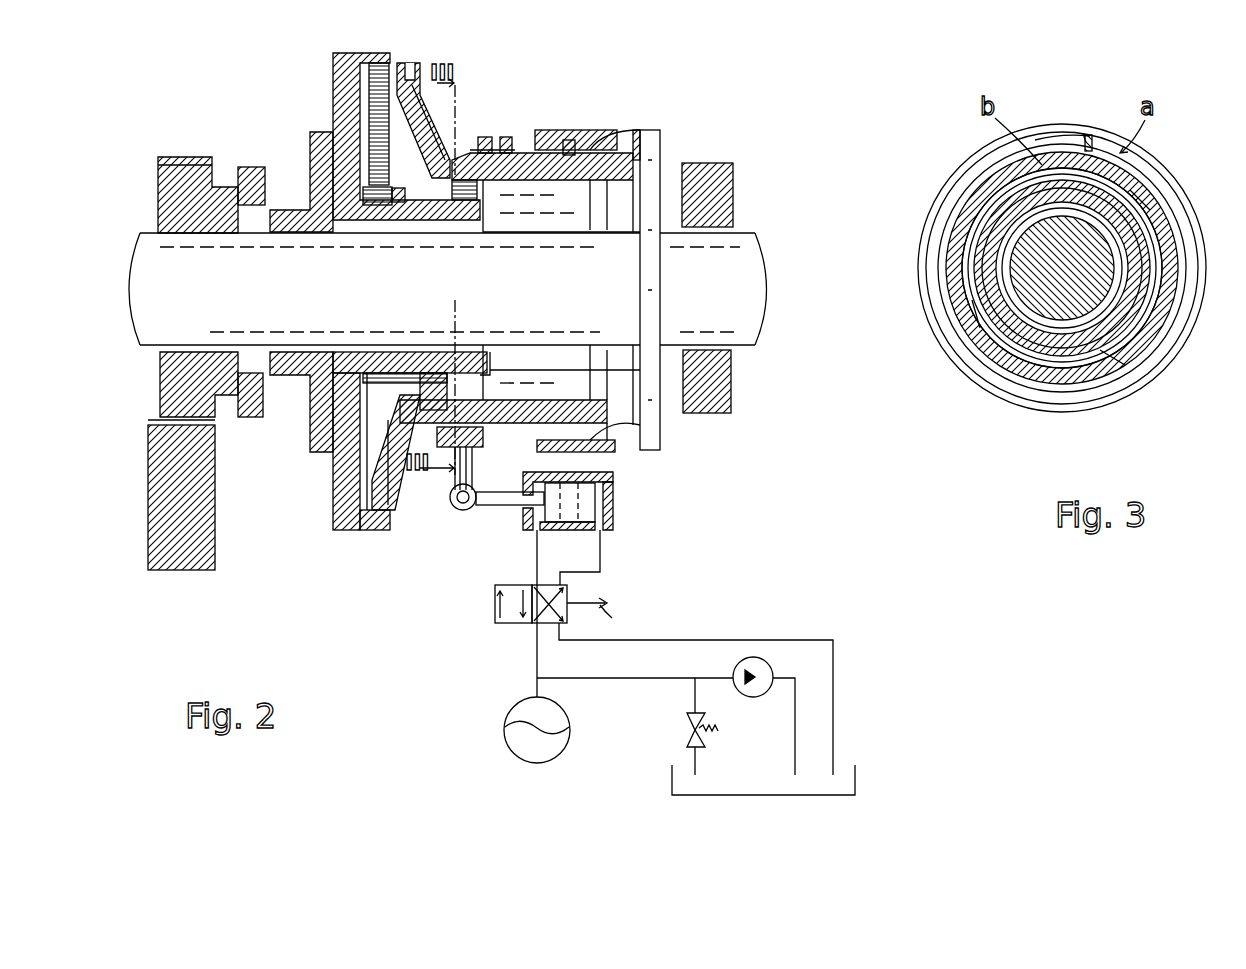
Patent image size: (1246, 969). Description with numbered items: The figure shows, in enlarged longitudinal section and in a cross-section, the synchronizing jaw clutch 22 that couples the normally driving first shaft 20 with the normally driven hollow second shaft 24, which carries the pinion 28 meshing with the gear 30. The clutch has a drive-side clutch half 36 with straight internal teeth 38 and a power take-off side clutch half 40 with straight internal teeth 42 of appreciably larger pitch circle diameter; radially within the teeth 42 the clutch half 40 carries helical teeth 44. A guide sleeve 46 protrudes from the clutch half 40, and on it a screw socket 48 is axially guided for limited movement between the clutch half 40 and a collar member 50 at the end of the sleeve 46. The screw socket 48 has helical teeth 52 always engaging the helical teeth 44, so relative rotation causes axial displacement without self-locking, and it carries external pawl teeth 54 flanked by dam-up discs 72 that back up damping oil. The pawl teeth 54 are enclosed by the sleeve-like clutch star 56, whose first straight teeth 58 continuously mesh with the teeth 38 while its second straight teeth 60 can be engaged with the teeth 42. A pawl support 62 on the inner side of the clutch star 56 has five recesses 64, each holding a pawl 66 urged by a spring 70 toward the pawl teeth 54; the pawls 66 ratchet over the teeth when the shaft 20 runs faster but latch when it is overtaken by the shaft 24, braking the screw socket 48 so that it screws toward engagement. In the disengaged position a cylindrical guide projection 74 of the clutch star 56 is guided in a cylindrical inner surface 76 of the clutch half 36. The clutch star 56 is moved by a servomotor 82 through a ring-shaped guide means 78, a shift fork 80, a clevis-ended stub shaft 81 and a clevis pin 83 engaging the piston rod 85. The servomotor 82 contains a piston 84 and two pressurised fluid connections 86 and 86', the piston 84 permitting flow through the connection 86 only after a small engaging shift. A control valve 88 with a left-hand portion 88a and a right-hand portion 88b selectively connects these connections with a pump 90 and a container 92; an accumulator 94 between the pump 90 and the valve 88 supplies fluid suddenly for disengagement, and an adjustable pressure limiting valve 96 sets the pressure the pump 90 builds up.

In FIG. 2, the first shaft 20 is at (735, 255).
In FIG. 3, the first shaft 20 is at (1050, 290).
In FIG. 2, the synchronizing jaw clutch 22 is at (386, 540).
In FIG. 2, the second shaft 24 is at (300, 215).
In FIG. 2, the pinion 28 is at (182, 188).
In FIG. 2, the gear 30 is at (200, 545).
In FIG. 2, the drive-side clutch half 36 is at (608, 146).
In FIG. 2, the straight teeth 38 is at (540, 132).
In FIG. 2, the power take-off side clutch half 40 is at (336, 70).
In FIG. 2, the straight teeth 42 is at (372, 86).
In FIG. 2, the helical teeth 44 is at (380, 190).
In FIG. 2, the guide sleeve 46 is at (445, 356).
In FIG. 3, the guide sleeve 46 is at (1150, 360).
In FIG. 2, the screw socket 48 is at (382, 372).
In FIG. 2, the collar member 50 is at (495, 372).
In FIG. 2, the helical teeth 52 is at (375, 207).
In FIG. 2, the pawl teeth 54 is at (462, 205).
In FIG. 3, the pawl teeth 54 is at (1045, 382).
In FIG. 2, the clutch star 56 is at (433, 130).
In FIG. 2, the first set of straight teeth 58 is at (568, 140).
In FIG. 2, the second set of straight teeth 60 is at (410, 62).
In FIG. 2, the pawl support 62 is at (497, 188).
In FIG. 3, the pawl support 62 is at (950, 328).
In FIG. 3, the recesses 64 is at (965, 350).
In FIG. 3, the pawl 66 is at (983, 365).
In FIG. 3, the spring 70 is at (1087, 134).
In FIG. 2, the dam-up discs 72 is at (398, 415).
In FIG. 2, the guide projection 74 is at (612, 400).
In FIG. 2, the cylindrical inner surface 76 is at (633, 418).
In FIG. 2, the guide means 78 is at (456, 480).
In FIG. 2, the shift fork 80 is at (473, 465).
In FIG. 2, the clevis-ended stub shaft 81 is at (452, 503).
In FIG. 2, the servomotor 82 is at (621, 525).
In FIG. 2, the clevis pin 83 is at (463, 503).
In FIG. 2, the piston 84 is at (553, 522).
In FIG. 2, the piston rod 85 is at (490, 505).
In FIG. 2, the pressurised fluid medium connection 86 is at (606, 557).
In FIG. 2, the pressurised fluid medium connection 86' is at (512, 613).
In FIG. 2, the control valve 88 is at (549, 628).
In FIG. 2, the left-hand portion 88a is at (505, 590).
In FIG. 2, the right-hand portion 88b is at (565, 592).
In FIG. 2, the pump 90 is at (757, 690).
In FIG. 2, the pressurised fluid medium container 92 is at (856, 773).
In FIG. 2, the accumulator 94 is at (520, 747).
In FIG. 2, the adjustable pressure limiting valve 96 is at (688, 735).